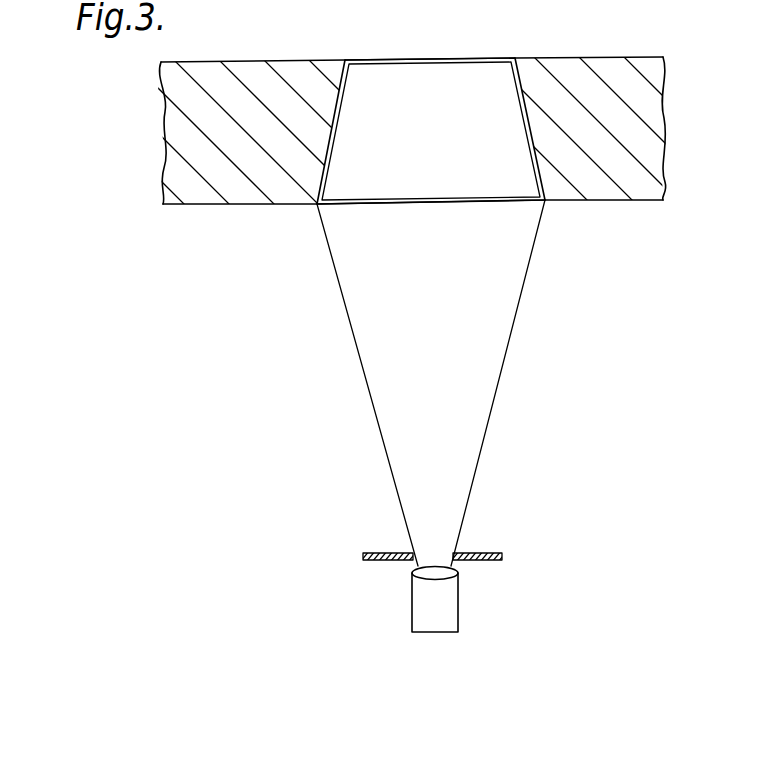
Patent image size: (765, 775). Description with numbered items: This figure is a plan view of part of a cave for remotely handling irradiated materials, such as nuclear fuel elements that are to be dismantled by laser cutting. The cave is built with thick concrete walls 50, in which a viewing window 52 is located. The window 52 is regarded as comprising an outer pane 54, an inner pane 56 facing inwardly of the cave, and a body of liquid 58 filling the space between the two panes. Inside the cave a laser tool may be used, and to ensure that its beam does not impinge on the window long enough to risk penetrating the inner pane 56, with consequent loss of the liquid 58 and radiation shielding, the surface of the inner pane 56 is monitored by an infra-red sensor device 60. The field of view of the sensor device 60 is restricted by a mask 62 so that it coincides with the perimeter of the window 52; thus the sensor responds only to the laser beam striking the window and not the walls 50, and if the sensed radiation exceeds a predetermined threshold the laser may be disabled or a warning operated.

The concrete walls 50 is at (257, 195).
The viewing window 52 is at (482, 51).
The outer pane 54 is at (424, 60).
The inner pane 56 is at (447, 203).
The body of liquid 58 is at (434, 150).
The infra-red sensor device 60 is at (470, 601).
The mask 62 is at (485, 552).